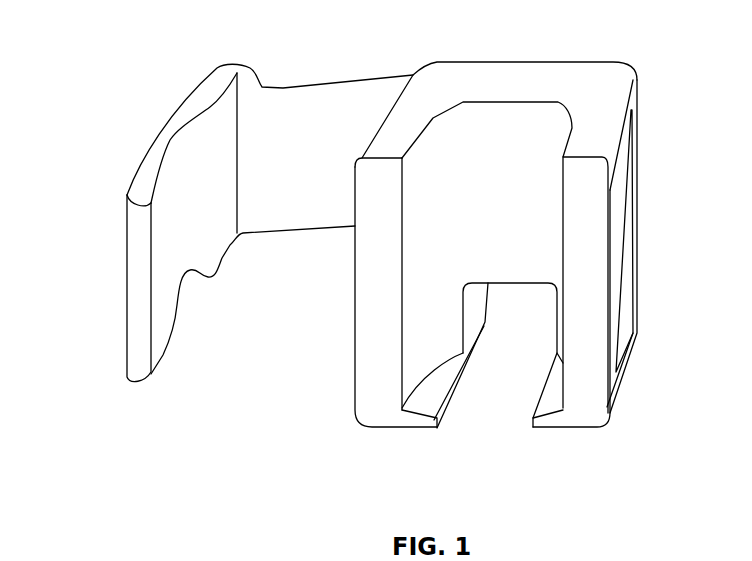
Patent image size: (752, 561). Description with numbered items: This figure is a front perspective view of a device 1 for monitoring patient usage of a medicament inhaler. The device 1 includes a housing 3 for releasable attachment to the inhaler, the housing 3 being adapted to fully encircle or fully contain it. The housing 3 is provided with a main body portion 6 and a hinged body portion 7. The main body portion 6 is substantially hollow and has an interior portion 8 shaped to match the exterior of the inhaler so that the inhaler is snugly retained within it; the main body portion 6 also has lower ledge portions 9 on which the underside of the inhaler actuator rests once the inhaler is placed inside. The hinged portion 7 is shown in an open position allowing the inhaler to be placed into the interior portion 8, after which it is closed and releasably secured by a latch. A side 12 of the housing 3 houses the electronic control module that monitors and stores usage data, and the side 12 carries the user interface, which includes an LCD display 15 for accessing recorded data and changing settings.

The device 1 is at (91, 46).
The housing 3 is at (657, 164).
The main body portion 6 is at (452, 78).
The hinged body portion 7 is at (147, 178).
The interior portion 8 is at (509, 124).
The lower ledge portions 9 is at (433, 390).
The side 12 is at (587, 410).
The LCD display 15 is at (622, 255).